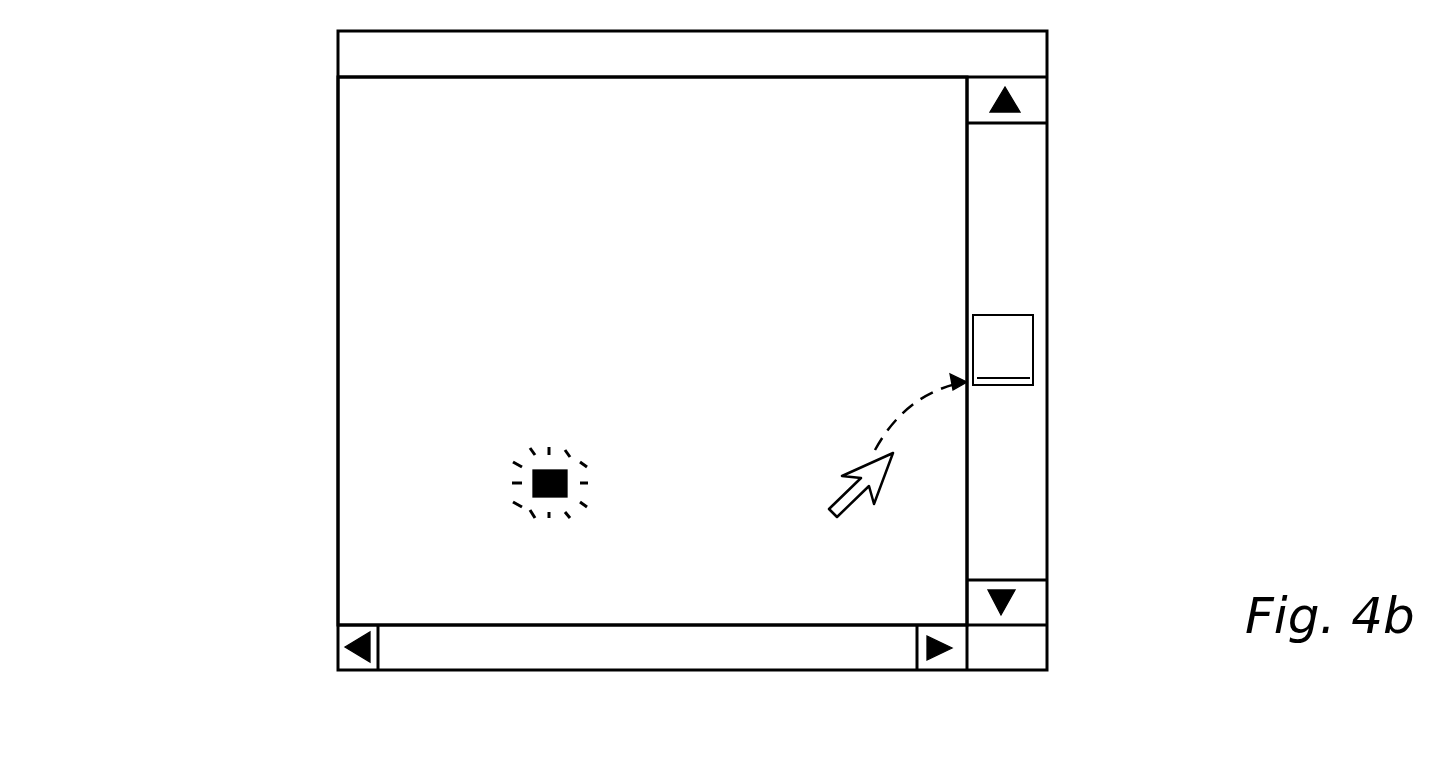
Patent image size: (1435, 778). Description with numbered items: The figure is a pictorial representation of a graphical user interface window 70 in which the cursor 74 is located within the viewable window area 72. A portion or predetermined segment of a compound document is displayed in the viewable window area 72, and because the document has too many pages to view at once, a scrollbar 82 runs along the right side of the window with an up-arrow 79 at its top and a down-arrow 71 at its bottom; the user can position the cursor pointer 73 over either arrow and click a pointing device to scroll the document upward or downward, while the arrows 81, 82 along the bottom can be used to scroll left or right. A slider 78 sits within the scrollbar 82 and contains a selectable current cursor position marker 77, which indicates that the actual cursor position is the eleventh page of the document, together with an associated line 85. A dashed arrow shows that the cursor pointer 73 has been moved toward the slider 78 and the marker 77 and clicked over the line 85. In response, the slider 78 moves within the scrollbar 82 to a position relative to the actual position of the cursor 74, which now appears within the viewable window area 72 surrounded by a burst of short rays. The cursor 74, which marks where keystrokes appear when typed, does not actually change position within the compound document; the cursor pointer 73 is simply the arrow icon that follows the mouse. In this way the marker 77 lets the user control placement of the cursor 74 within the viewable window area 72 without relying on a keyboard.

The graphical user interface window 70 is at (228, 720).
The viewable window area 72 is at (365, 113).
The scrollbar 82 is at (1022, 232).
The up-arrow 79 is at (1022, 104).
The down-arrow 71 is at (1018, 606).
The arrow 81 is at (352, 661).
The slider 78 is at (1012, 315).
The selectable current cursor position marker 77 is at (1012, 350).
The line 85 is at (1003, 385).
The cursor pointer 73 is at (868, 458).
The cursor 74 is at (575, 452).